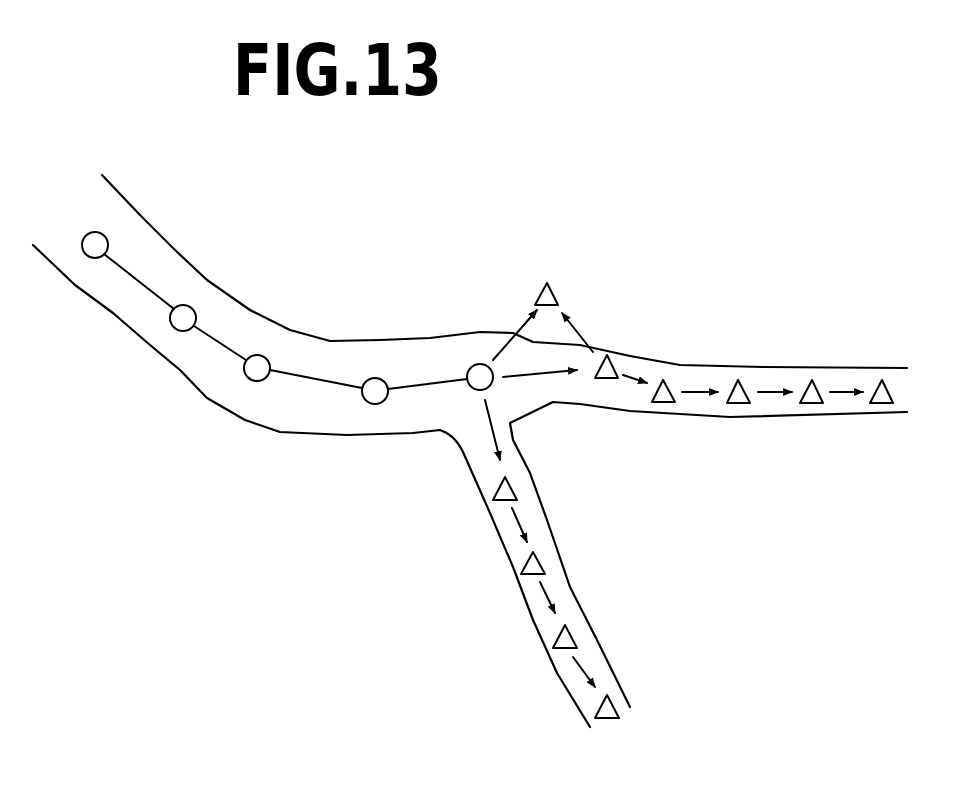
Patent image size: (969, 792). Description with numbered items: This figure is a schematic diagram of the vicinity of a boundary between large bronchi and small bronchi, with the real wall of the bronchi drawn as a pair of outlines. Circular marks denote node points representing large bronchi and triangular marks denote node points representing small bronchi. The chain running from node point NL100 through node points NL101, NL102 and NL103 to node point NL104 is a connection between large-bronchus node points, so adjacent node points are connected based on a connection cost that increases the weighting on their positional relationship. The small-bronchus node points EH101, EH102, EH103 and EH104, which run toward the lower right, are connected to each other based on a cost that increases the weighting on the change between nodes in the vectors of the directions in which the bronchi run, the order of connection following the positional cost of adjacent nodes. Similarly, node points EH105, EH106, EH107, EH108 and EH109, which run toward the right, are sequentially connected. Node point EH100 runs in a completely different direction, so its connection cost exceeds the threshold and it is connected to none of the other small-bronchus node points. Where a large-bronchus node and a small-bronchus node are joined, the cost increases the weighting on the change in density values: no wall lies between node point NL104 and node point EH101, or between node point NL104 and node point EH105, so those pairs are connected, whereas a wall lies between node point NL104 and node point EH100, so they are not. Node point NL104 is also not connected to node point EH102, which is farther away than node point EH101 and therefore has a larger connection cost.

The node point representing large bronchi NL100 is at (105, 233).
The node point representing large bronchi NL101 is at (190, 306).
The node point representing large bronchi NL102 is at (263, 355).
The node point representing large bronchi NL103 is at (377, 378).
The node point representing large bronchi NL104 is at (477, 390).
The node point representing small bronchi EH100 is at (547, 283).
The node point representing small bronchi EH101 is at (497, 505).
The node point representing small bronchi EH102 is at (525, 566).
The node point representing small bronchi EH103 is at (553, 637).
The node point representing small bronchi EH104 is at (597, 705).
The node point representing small bronchi EH105 is at (610, 355).
The node point representing small bronchi EH106 is at (663, 380).
The node point representing small bronchi EH107 is at (738, 380).
The node point representing small bronchi EH108 is at (812, 380).
The node point representing small bronchi EH109 is at (882, 404).